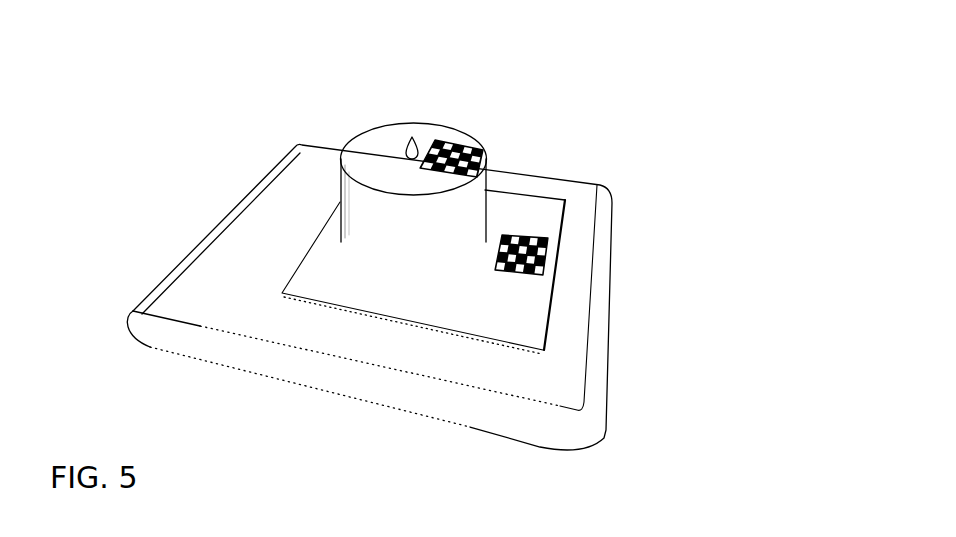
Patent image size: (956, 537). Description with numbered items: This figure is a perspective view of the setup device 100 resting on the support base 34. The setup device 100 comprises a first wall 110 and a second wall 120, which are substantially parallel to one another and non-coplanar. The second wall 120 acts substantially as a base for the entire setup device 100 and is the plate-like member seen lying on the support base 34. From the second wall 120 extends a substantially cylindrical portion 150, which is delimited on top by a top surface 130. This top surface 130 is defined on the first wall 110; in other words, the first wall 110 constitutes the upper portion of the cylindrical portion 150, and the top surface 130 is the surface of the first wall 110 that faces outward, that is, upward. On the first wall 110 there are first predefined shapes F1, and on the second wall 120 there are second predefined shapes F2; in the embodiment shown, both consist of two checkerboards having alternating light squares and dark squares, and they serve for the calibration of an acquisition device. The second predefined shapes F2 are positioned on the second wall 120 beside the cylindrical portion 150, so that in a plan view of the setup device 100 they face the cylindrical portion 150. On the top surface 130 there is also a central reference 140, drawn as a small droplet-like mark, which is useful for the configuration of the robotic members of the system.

The setup device 100 is at (668, 362).
The support base 34 is at (520, 372).
The first wall 110 is at (402, 122).
The second wall 120 is at (533, 205).
The top surface 130 is at (368, 135).
The central reference 140 is at (408, 145).
The cylindrical portion 150 is at (362, 205).
The first predefined shapes F1 is at (458, 148).
The second predefined shapes F2 is at (548, 238).